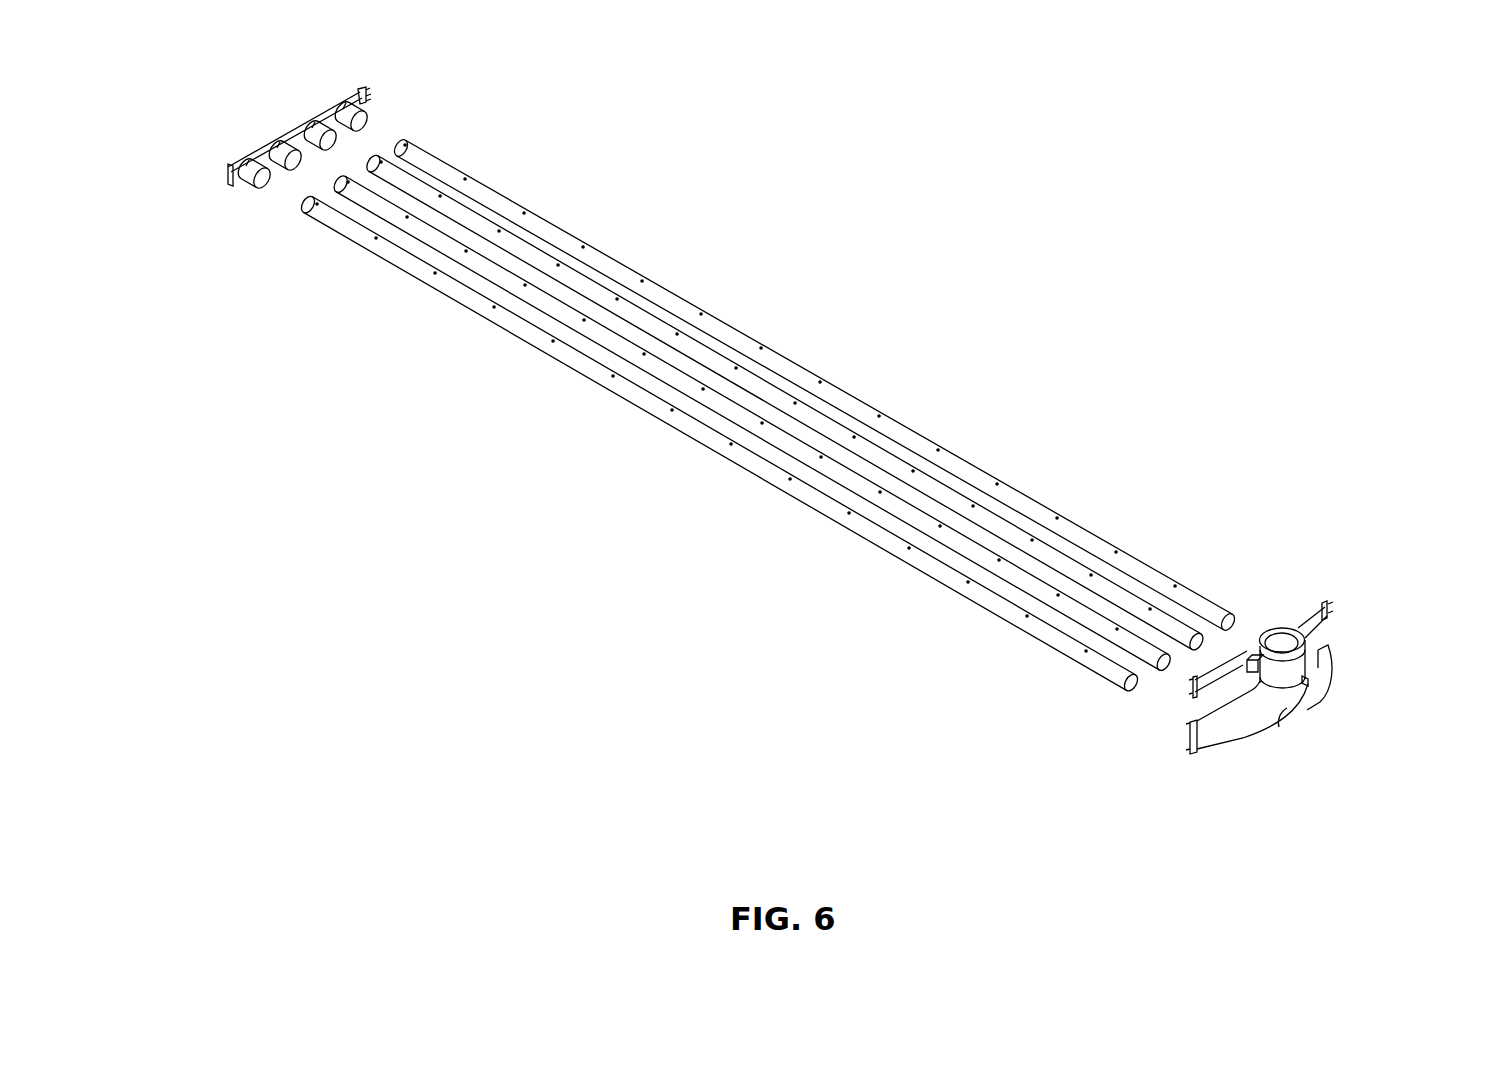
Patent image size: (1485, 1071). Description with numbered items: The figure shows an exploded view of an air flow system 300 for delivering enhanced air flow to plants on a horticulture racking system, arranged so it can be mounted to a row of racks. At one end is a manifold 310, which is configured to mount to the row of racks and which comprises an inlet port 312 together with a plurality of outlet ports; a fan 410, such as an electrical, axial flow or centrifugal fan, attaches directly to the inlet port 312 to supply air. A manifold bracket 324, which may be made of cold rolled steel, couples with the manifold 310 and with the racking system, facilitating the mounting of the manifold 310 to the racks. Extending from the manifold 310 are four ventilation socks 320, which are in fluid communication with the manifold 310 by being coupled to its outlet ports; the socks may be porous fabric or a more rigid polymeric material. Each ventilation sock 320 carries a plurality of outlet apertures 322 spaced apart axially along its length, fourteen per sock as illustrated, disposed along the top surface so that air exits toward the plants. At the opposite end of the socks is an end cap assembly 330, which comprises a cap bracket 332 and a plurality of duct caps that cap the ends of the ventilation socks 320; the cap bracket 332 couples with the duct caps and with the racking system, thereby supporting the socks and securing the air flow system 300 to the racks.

The air flow system 300 is at (1196, 354).
The manifold 310 is at (1241, 727).
The inlet port 312 is at (1286, 676).
The ventilation socks 320 is at (569, 374).
The outlet apertures 322 is at (369, 238).
The manifold bracket 324 is at (360, 123).
The end cap assembly 330 is at (211, 170).
The cap bracket 332 is at (308, 124).
The fan 410 is at (1293, 643).